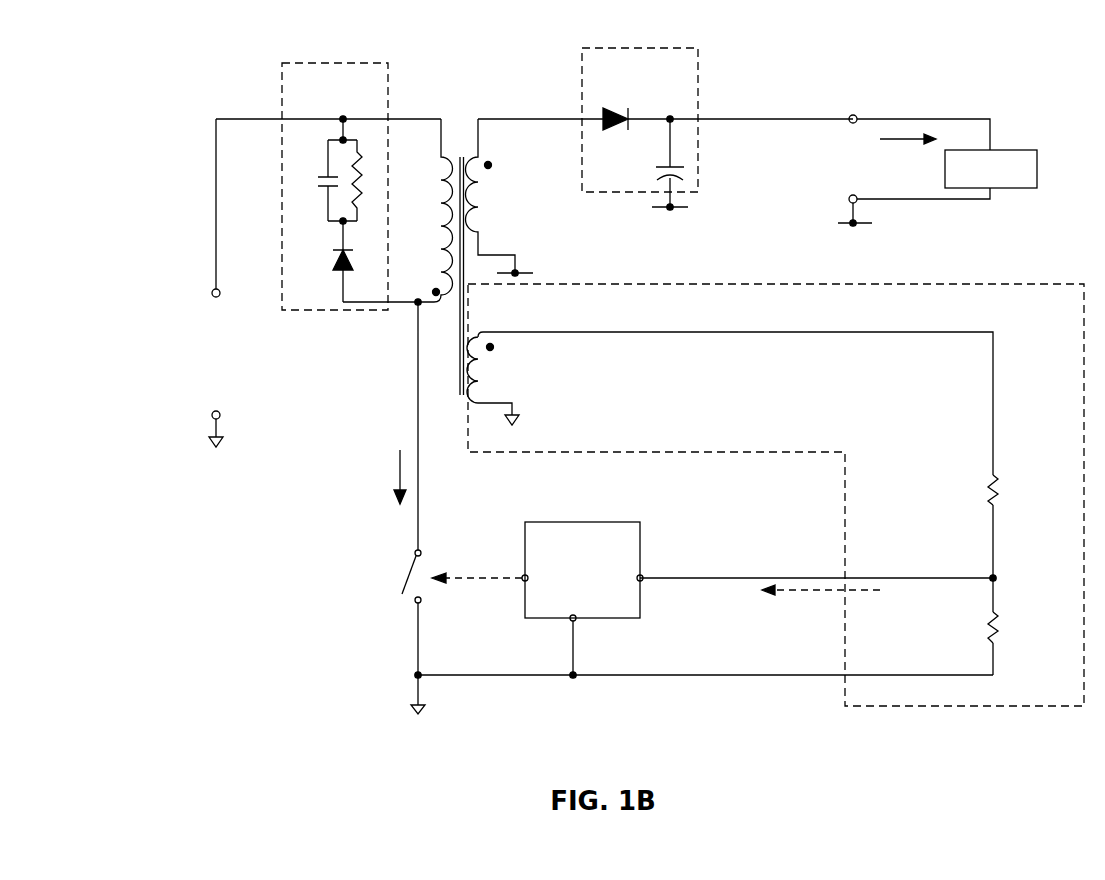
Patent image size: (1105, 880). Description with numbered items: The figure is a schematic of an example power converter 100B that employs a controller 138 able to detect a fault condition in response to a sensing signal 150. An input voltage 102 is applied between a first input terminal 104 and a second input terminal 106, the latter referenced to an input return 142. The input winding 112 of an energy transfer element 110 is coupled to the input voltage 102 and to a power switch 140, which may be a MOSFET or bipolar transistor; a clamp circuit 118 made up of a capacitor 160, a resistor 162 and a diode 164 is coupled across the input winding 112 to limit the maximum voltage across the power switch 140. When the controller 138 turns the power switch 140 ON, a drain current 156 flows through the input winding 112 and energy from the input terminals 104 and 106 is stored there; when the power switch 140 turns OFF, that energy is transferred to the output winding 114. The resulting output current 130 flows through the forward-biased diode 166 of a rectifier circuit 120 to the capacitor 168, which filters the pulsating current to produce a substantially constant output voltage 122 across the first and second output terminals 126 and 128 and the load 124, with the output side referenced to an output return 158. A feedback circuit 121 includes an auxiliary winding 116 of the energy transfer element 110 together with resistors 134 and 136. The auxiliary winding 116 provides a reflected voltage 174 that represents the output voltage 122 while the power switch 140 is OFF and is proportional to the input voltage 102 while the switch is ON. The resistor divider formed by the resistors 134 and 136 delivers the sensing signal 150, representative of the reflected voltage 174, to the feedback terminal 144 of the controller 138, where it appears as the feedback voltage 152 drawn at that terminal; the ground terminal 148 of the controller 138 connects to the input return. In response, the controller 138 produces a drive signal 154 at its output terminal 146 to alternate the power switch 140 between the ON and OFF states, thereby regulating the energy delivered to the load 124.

The power converter 100B is at (180, 56).
The input voltage 102 is at (200, 366).
The first input terminal 104 is at (208, 300).
The second input terminal 106 is at (210, 431).
The energy transfer element 110 is at (462, 107).
The input winding 112 is at (441, 132).
The output winding 114 is at (486, 190).
The auxiliary winding 116 is at (510, 375).
The clamp circuit 118 is at (309, 186).
The rectifier circuit 120 is at (664, 127).
The feedback circuit 121 is at (776, 495).
The output voltage 122 is at (812, 166).
The load 124 is at (991, 169).
The first output terminal 126 is at (862, 114).
The second output terminal 128 is at (848, 208).
The output current 130 is at (904, 158).
The resistor 134 is at (1005, 493).
The resistor 136 is at (1005, 624).
The controller 138 is at (571, 593).
The power switch 140 is at (410, 557).
The input return 142 is at (435, 712).
The feedback terminal 144 is at (645, 574).
The output terminal 146 is at (519, 583).
The ground terminal 148 is at (571, 629).
The sensing signal 150 is at (820, 595).
The feedback voltage VFB 152 is at (664, 616).
The drive signal 154 is at (490, 571).
The drain current 156 is at (396, 463).
The output return 158 is at (678, 212).
The capacitor 160 is at (318, 182).
The resistor 162 is at (365, 208).
The diode 164 is at (333, 262).
The diode 166 is at (613, 135).
The capacitor 168 is at (688, 177).
The reflected voltage 174 is at (590, 373).